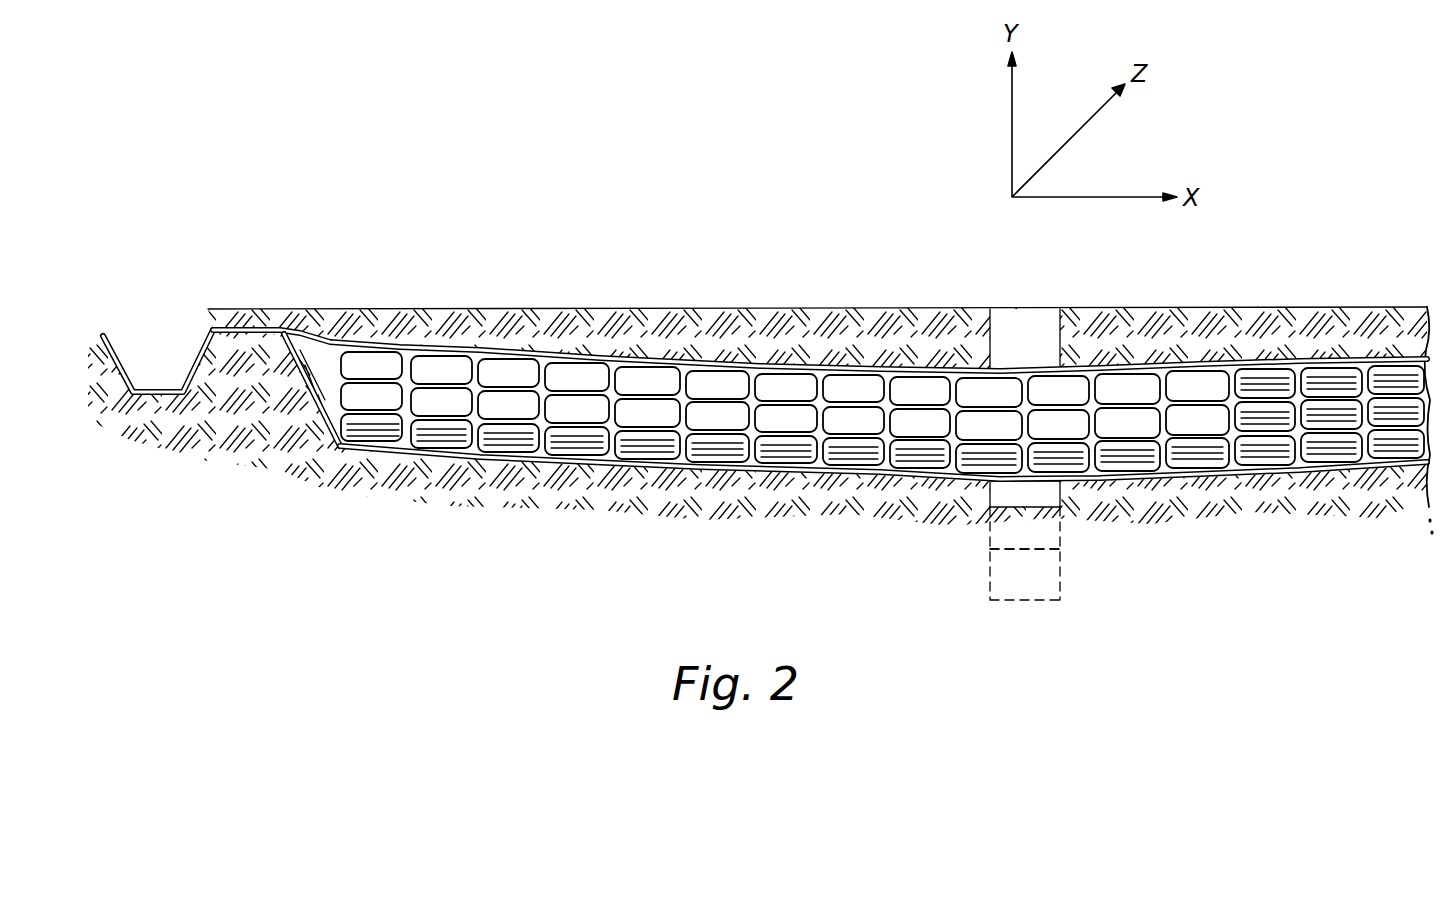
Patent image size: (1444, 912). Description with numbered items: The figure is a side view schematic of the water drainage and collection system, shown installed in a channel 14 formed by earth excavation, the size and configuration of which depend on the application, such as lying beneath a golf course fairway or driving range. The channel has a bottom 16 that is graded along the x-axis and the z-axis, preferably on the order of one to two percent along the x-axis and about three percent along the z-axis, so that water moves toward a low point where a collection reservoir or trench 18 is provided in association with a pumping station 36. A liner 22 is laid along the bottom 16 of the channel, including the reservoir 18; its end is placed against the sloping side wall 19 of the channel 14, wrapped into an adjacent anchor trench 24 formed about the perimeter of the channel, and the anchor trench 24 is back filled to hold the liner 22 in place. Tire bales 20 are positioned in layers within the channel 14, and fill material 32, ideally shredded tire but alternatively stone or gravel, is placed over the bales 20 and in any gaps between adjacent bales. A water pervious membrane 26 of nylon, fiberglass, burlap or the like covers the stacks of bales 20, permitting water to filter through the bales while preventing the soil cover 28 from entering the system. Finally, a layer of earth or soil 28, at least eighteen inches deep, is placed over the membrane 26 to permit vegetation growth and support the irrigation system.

The channel 14 is at (882, 369).
The bottom 16 is at (1333, 467).
The collection reservoir 18 is at (1003, 532).
The sloping side wall 19 is at (280, 360).
The tire bales 20 is at (520, 440).
The liner 22 is at (737, 474).
The anchor trench 24 is at (123, 357).
The water pervious membrane 26 is at (738, 366).
The soil cover 28 is at (532, 340).
The fill material 32 is at (944, 400).
The pumping station 36 is at (1040, 332).